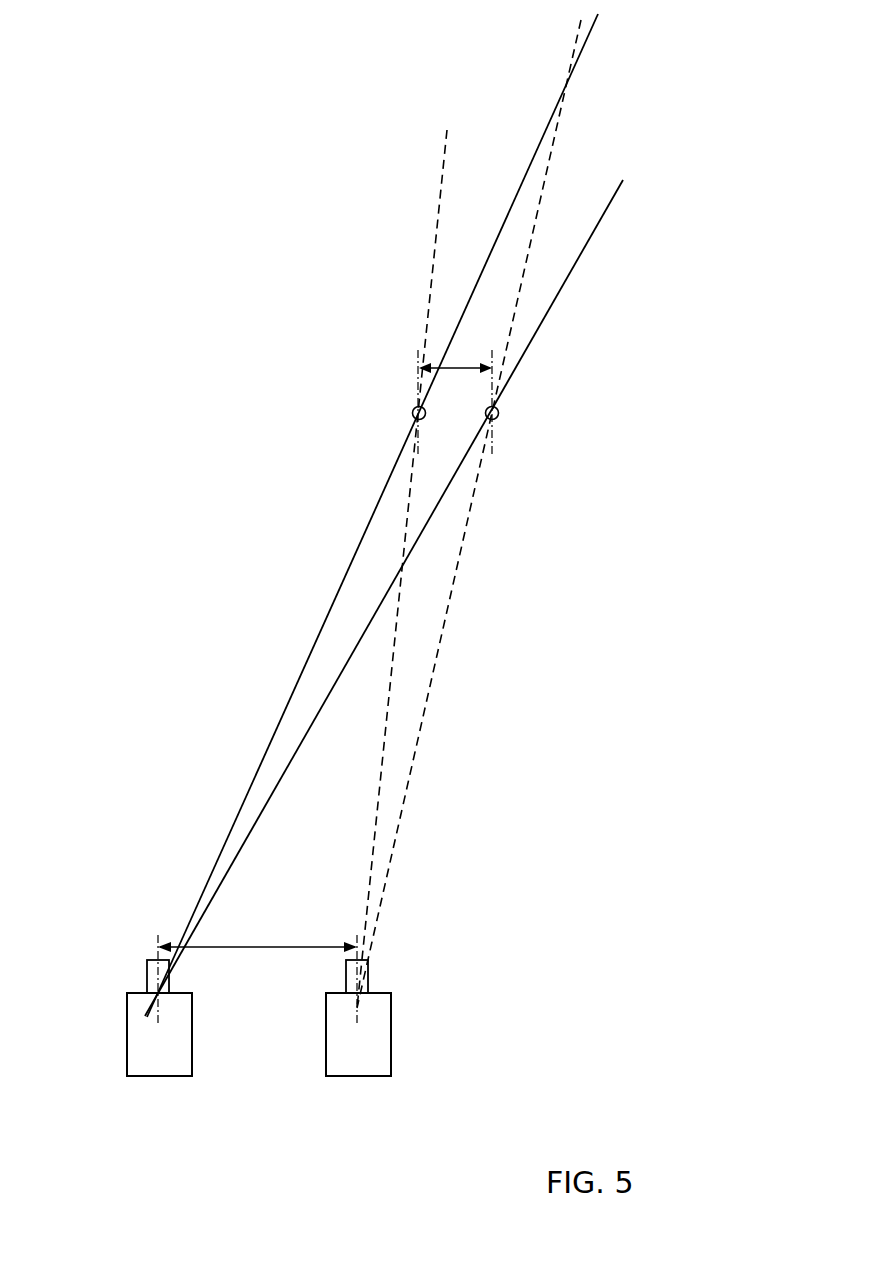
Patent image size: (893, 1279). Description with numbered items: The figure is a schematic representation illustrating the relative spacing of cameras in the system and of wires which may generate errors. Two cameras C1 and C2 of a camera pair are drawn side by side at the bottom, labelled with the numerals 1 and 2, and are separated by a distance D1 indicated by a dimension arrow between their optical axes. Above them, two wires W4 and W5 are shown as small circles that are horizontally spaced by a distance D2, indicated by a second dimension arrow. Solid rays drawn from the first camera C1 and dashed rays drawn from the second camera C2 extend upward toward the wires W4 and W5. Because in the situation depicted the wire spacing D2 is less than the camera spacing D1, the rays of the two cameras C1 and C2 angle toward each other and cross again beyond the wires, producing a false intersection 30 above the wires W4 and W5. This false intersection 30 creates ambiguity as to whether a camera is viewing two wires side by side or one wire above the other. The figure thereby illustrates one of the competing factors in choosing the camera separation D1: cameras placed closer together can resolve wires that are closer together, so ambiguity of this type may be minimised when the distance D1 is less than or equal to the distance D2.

The false intersection 30 is at (570, 78).
The wire W4 is at (412, 414).
The wire W5 is at (498, 411).
The distance between cameras D1 is at (257, 933).
The distance between wires D2 is at (455, 377).
The camera C1 is at (124, 1046).
The camera C2 is at (378, 1046).
The camera 1 body 1 is at (159, 1034).
The camera 2 body 2 is at (358, 1034).